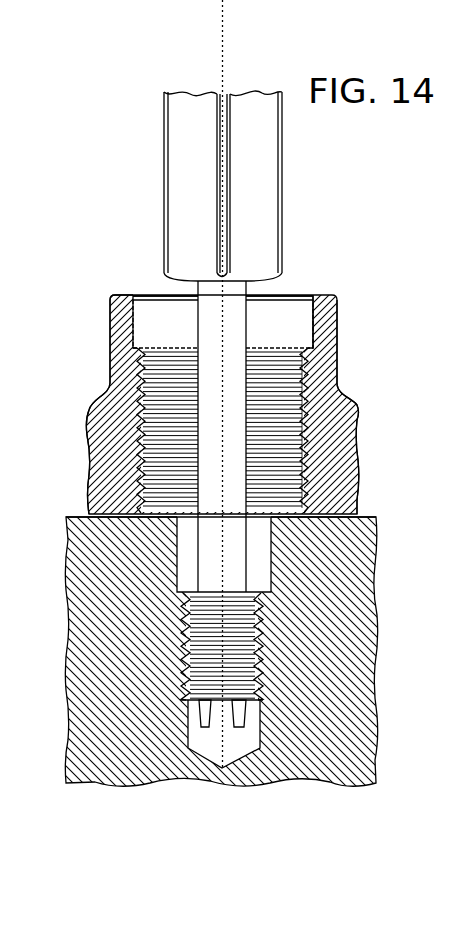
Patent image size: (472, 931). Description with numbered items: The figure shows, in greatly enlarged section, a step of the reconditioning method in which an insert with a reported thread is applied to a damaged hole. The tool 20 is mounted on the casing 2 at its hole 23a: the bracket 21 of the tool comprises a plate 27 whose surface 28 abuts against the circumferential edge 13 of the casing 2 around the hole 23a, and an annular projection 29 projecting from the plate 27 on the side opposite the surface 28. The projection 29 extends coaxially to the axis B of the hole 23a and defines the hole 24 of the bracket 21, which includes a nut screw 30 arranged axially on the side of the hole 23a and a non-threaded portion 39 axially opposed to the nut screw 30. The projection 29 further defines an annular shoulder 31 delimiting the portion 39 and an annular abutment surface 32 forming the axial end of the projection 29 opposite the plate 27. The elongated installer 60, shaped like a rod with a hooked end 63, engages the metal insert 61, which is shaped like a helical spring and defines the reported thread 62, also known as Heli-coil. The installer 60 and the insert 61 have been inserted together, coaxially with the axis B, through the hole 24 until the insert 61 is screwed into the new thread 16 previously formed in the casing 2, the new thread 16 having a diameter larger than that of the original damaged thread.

The axis B is at (222, 52).
The casing 2 is at (377, 537).
The circumferential edge 13 is at (156, 279).
The new thread 16 is at (192, 645).
The tool 20 is at (358, 379).
The bracket 21 is at (340, 458).
The hole 23a is at (193, 737).
The hole 24 is at (146, 315).
The plate 27 is at (117, 340).
The surface 28 is at (113, 519).
The annular projection 29 is at (100, 471).
The nut screw 30 is at (298, 422).
The annular shoulder 31 is at (332, 320).
The annular abutment surface 32 is at (119, 291).
The portion 39 is at (313, 323).
The installer 60 is at (282, 215).
The metal insert 61 is at (177, 673).
The reported thread 62 is at (203, 683).
The hooked end 63 is at (250, 710).